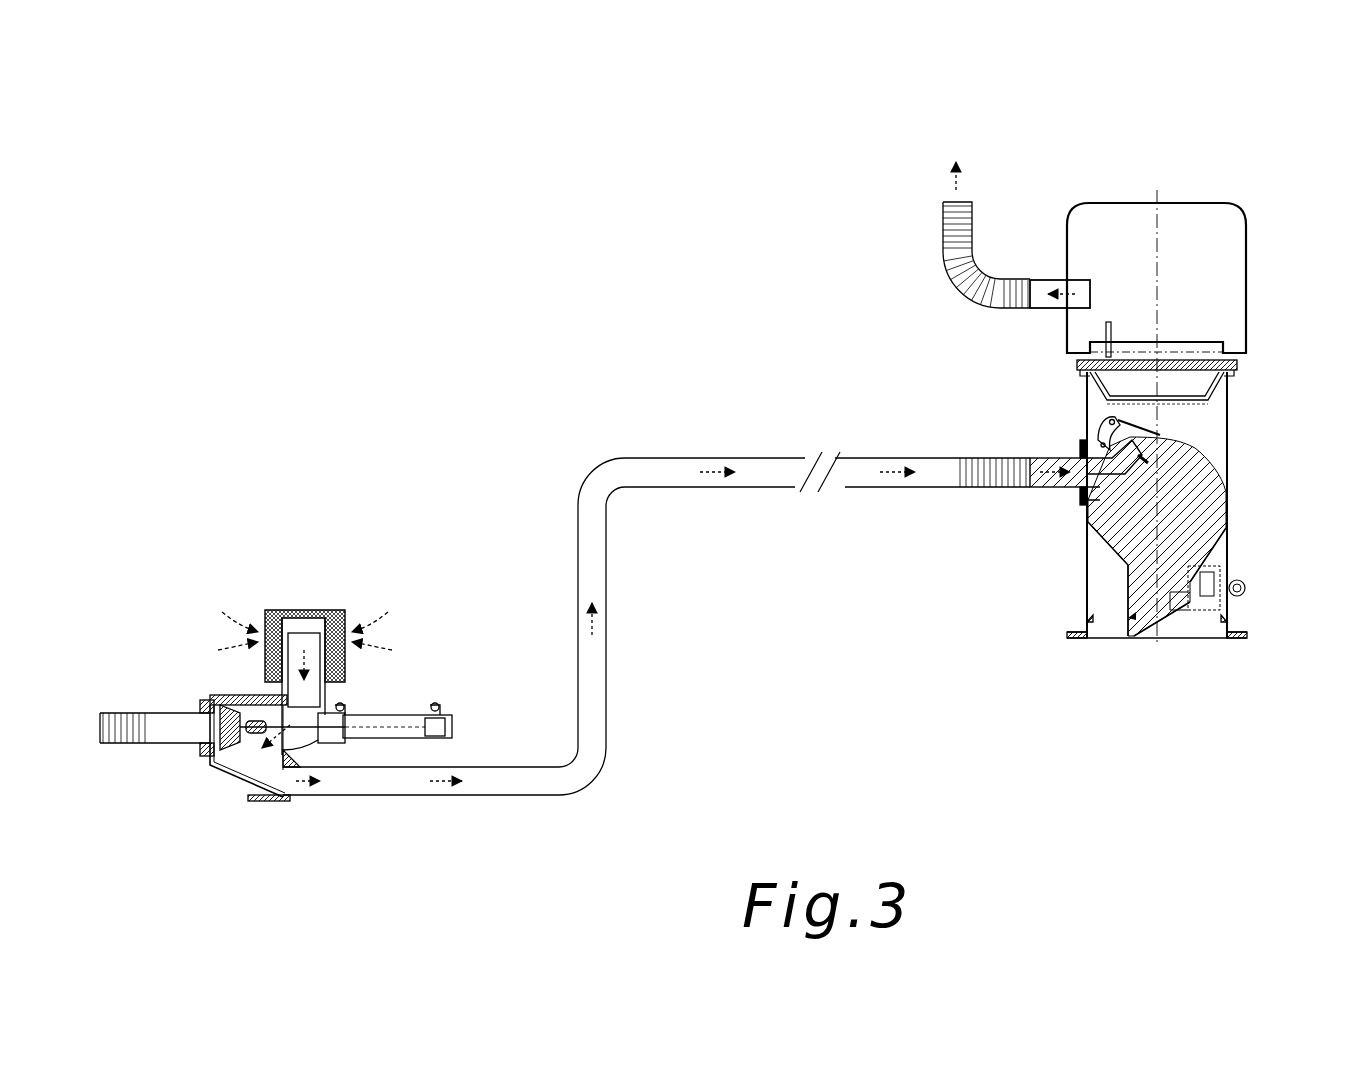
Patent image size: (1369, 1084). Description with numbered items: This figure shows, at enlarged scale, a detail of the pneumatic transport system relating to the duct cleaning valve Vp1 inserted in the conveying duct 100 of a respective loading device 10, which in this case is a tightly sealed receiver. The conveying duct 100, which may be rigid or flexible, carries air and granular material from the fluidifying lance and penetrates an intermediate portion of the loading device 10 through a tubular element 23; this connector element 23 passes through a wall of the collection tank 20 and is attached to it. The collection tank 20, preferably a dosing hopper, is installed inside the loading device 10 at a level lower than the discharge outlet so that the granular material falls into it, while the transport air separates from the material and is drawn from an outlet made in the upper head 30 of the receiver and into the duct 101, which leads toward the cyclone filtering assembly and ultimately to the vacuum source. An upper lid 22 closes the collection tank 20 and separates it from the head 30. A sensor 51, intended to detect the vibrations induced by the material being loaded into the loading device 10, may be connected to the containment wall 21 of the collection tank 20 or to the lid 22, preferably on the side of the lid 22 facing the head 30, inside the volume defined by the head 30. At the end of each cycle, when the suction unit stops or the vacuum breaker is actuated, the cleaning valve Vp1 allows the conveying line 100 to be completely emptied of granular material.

The loading device 10 is at (1005, 608).
The collection tank 20 is at (1232, 477).
The containment wall 21 is at (1228, 500).
The upper lid 22 is at (1190, 358).
The tubular element 23 is at (1052, 490).
The upper head 30 is at (1172, 203).
The sensor 51 is at (1040, 333).
The conveying duct 100 is at (112, 716).
The duct 101 is at (943, 233).
The duct cleaning valve Vp1 is at (215, 784).